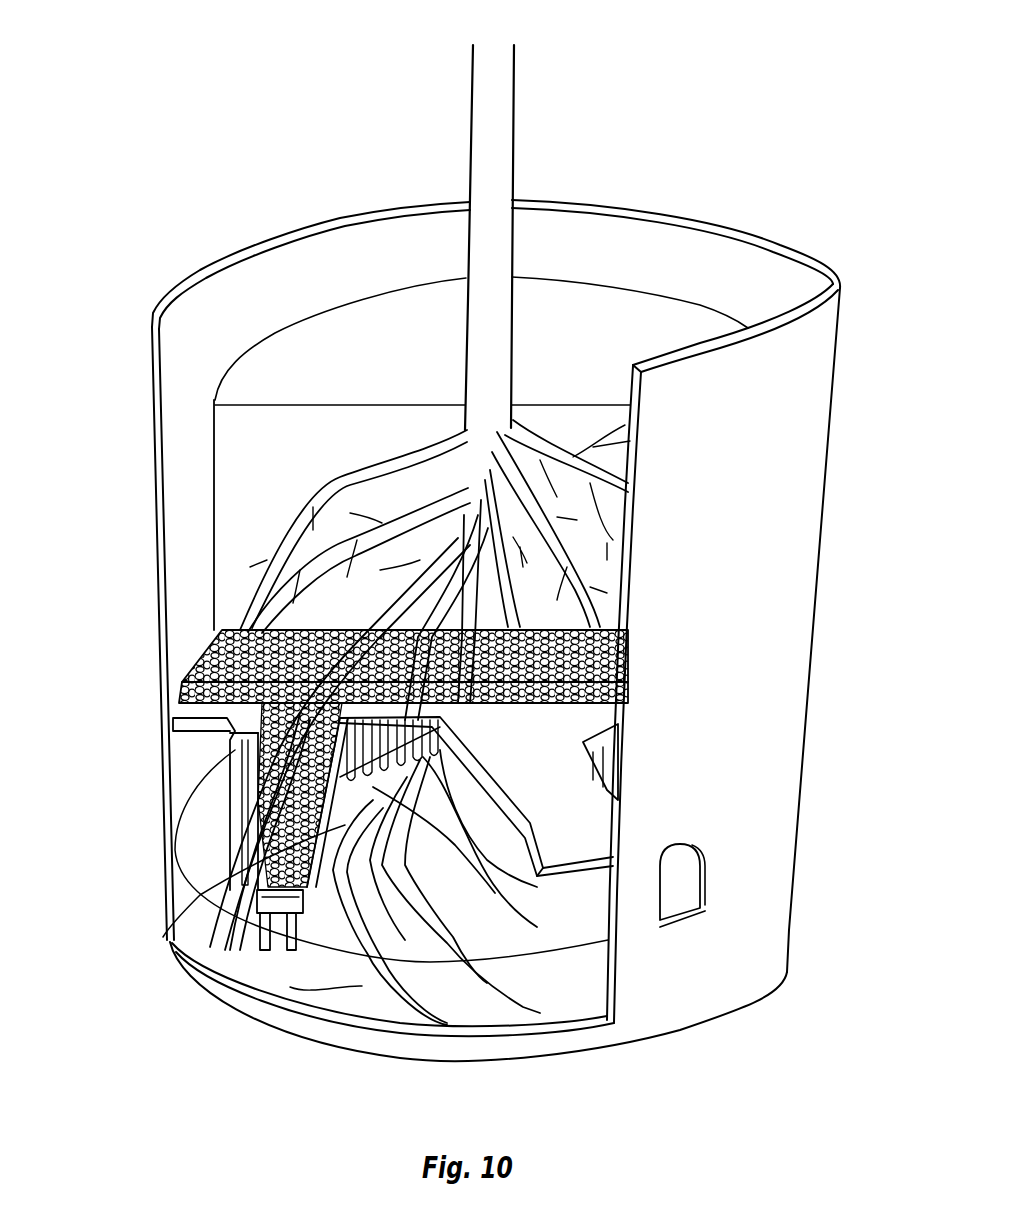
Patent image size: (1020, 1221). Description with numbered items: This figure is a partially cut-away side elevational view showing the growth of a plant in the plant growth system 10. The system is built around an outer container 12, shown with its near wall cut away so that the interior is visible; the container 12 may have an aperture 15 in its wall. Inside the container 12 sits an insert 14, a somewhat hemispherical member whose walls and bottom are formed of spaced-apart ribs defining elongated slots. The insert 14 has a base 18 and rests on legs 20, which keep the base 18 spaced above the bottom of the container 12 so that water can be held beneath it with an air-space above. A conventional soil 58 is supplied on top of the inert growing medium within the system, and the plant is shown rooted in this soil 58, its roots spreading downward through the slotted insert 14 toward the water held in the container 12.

The plant growth system 10 is at (724, 140).
The outer container 12 is at (718, 268).
The insert 14 is at (230, 782).
The aperture 15 is at (672, 882).
The base 18 is at (262, 938).
The legs 20 is at (267, 950).
The soil 58 is at (352, 474).